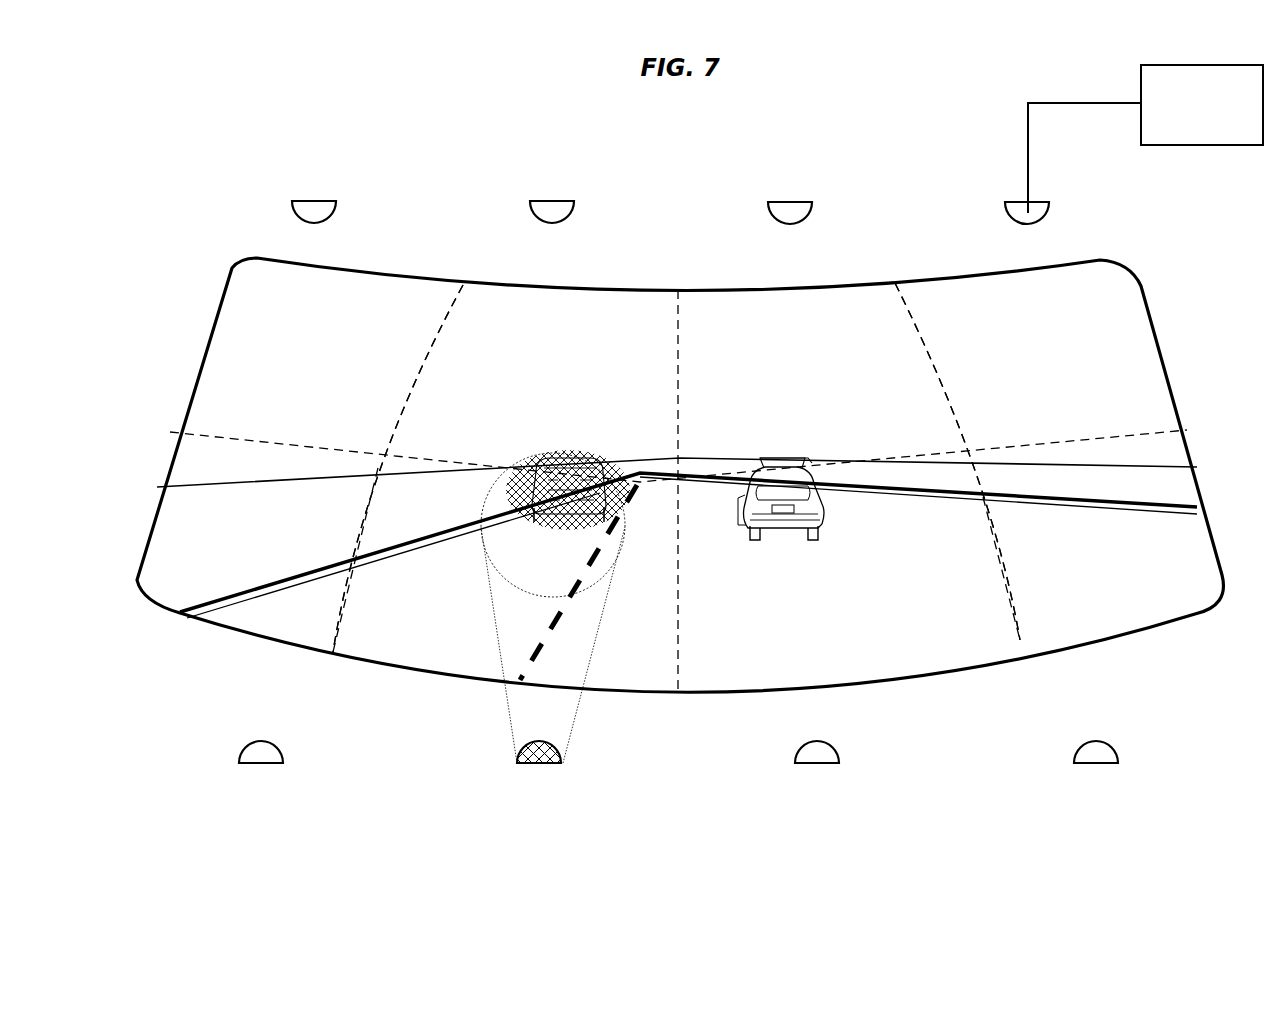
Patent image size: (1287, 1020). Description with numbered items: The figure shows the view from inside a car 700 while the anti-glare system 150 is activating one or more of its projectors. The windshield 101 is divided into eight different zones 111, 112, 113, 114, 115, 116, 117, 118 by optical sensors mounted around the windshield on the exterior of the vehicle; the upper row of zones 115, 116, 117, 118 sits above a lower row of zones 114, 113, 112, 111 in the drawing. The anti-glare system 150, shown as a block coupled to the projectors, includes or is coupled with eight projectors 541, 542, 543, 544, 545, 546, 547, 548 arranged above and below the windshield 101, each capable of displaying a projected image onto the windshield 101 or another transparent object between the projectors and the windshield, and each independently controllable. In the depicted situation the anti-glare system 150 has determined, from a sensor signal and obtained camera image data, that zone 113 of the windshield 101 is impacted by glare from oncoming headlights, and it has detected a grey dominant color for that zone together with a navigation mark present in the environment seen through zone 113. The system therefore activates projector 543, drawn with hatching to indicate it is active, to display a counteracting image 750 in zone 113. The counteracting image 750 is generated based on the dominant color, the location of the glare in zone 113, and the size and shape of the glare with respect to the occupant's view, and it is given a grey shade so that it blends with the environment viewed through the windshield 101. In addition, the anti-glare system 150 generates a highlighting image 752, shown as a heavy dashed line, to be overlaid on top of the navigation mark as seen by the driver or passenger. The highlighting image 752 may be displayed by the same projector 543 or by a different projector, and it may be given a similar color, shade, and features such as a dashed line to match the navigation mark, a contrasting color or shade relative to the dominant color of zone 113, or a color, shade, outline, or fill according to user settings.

The car 700 is at (386, 170).
The windshield 101 is at (1165, 340).
The anti-glare system 150 is at (1202, 105).
The zone 111 is at (1056, 568).
The zone 112 is at (791, 522).
The zone 113 is at (381, 560).
The zone 114 is at (228, 510).
The zone 115 is at (376, 468).
The zone 116 is at (435, 468).
The zone 117 is at (904, 461).
The zone 118 is at (979, 461).
The projector 541 is at (1100, 764).
The projector 542 is at (826, 764).
The projector 543 is at (542, 764).
The projector 544 is at (258, 764).
The projector 545 is at (304, 207).
The projector 546 is at (543, 207).
The projector 547 is at (800, 208).
The projector 548 is at (1040, 208).
The counteracting image 750 is at (472, 537).
The highlighting image 752 is at (623, 540).